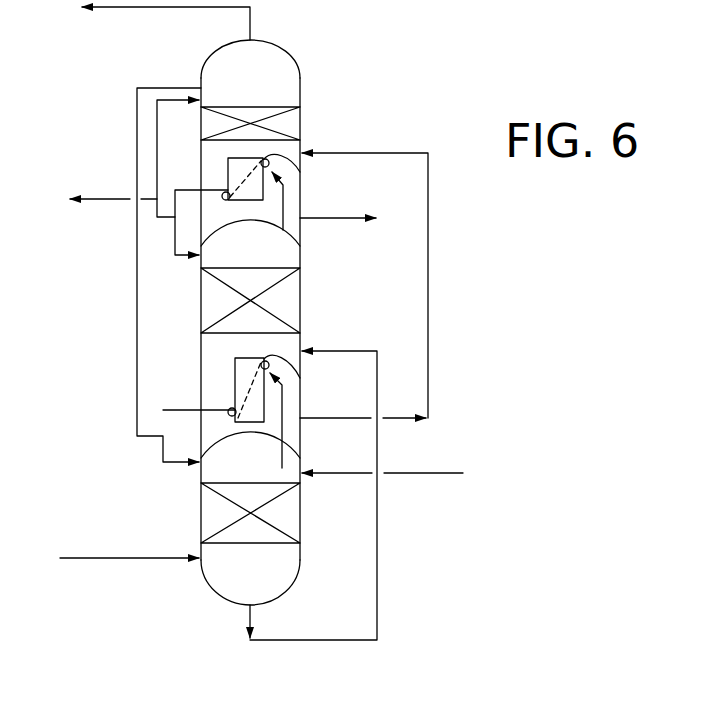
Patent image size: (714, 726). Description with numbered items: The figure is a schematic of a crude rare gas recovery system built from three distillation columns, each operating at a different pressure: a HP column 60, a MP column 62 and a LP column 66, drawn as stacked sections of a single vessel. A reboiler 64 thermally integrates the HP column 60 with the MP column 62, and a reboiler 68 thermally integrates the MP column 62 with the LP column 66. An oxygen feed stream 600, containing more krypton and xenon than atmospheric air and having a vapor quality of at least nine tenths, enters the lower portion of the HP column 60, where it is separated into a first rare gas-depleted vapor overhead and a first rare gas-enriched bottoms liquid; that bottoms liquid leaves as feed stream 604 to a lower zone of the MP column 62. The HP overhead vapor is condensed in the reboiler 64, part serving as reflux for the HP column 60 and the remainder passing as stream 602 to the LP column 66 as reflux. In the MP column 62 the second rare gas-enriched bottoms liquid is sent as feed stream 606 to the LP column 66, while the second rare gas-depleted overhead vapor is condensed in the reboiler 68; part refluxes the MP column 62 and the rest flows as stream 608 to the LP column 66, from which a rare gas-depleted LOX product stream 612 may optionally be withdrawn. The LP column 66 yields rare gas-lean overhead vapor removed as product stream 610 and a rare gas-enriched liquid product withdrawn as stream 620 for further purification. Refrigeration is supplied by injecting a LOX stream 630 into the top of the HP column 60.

The HP column 60 is at (201, 513).
The MP column 62 is at (201, 300).
The reboiler 64 is at (300, 372).
The LP column 66 is at (300, 93).
The reboiler 68 is at (300, 172).
The oxygen feed stream 600 is at (150, 558).
The stream 602 is at (137, 388).
The feed stream 604 is at (377, 601).
The feed stream 606 is at (428, 345).
The stream 608 is at (157, 222).
The product stream 610 is at (184, 7).
The rare gas-depleted LOX product stream 612 is at (110, 199).
The stream 620 is at (333, 218).
The LOX stream 630 is at (418, 473).